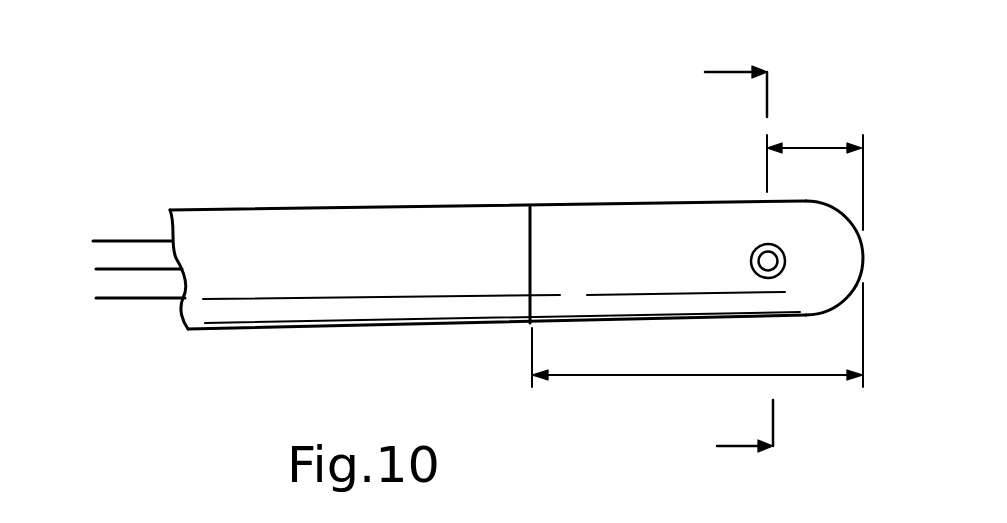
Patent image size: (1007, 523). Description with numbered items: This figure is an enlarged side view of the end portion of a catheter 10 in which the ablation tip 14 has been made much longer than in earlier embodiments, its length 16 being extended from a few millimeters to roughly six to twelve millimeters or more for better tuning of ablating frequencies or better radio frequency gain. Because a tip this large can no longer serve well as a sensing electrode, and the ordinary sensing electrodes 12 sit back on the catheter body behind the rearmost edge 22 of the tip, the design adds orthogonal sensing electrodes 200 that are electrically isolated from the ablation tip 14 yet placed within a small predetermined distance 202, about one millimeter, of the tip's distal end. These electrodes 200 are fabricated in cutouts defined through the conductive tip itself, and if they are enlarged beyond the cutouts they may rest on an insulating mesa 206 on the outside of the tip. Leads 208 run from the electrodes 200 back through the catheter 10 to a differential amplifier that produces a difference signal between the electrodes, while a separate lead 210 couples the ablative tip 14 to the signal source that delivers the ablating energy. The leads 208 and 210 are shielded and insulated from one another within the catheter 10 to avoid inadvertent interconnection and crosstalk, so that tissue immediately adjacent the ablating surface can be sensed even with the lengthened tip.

The catheter 10 is at (538, 131).
The sensing electrodes 12 is at (719, 266).
The ablation tip 14 is at (874, 219).
The length 16 is at (660, 377).
The rearmost edge 22 is at (530, 237).
The orthogonal sensing electrodes 200 is at (768, 258).
The predetermined distance 202 is at (822, 147).
The insulating mesa 206 is at (868, 298).
The leads 208 is at (145, 240).
The lead 210 is at (118, 270).